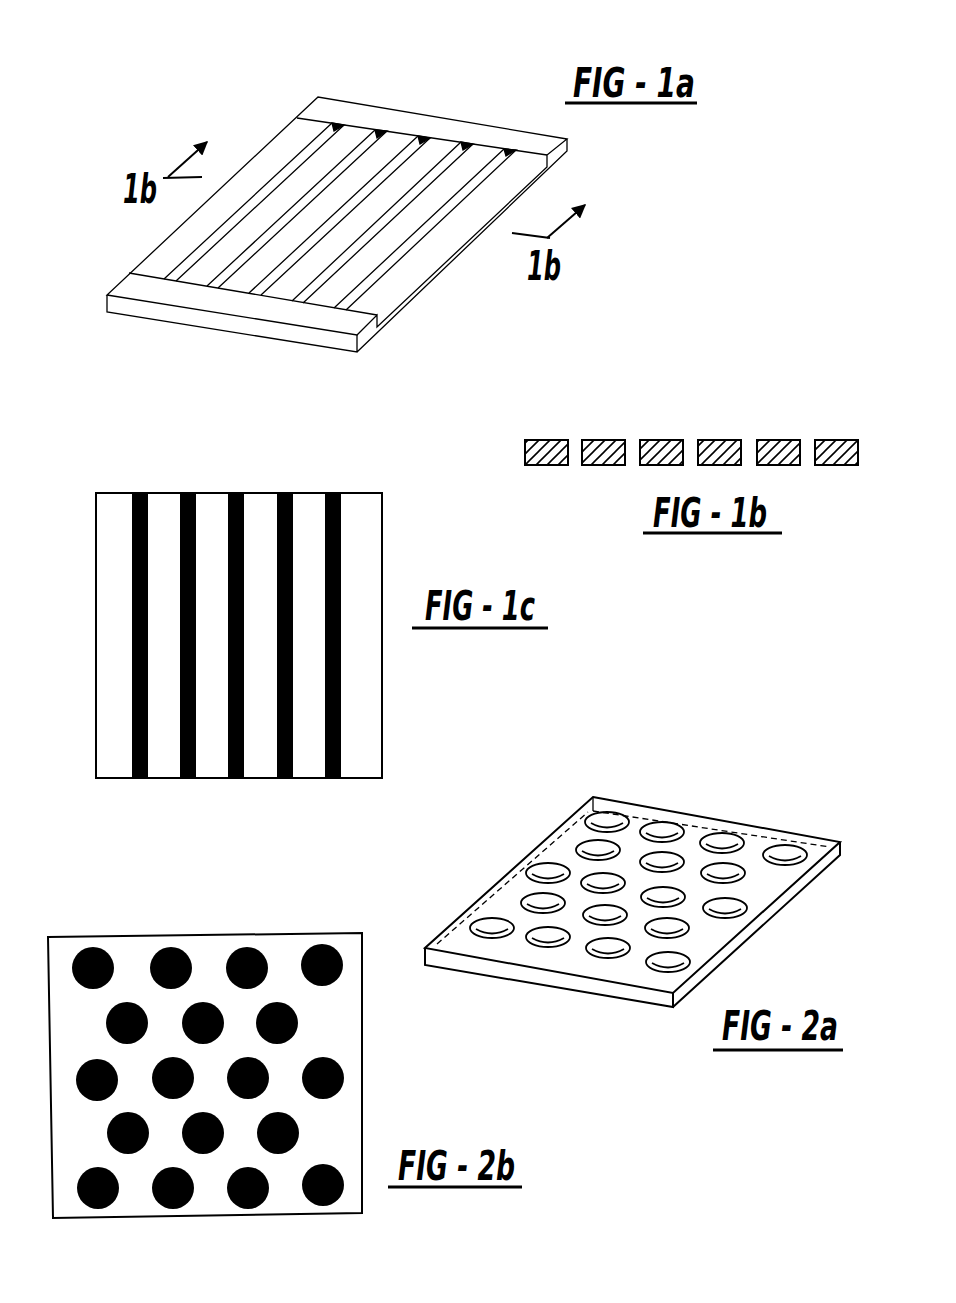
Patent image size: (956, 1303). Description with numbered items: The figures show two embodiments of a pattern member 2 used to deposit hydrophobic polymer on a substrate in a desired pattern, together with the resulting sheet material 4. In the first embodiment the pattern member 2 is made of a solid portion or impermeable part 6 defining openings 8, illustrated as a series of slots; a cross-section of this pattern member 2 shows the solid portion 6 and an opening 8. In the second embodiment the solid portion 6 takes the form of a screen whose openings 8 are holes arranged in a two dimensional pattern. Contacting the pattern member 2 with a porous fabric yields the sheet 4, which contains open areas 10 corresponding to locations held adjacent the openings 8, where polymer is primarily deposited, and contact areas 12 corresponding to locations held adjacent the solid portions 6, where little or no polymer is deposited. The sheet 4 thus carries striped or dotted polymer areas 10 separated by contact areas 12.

In FIG. 1A, the pattern member 2 is at (265, 112).
In FIG. 1B, the pattern member 2 is at (633, 425).
In FIG. 2A, the pattern member 2 is at (562, 790).
In FIG. 1C, the sheet material 4 is at (122, 462).
In FIG. 2B, the sheet material 4 is at (92, 915).
In FIG. 1A, the solid portion 6 is at (512, 135).
In FIG. 1B, the solid portion 6 is at (795, 443).
In FIG. 2A, the solid portion 6 is at (800, 837).
In FIG. 1A, the openings 8 is at (410, 135).
In FIG. 1B, the openings 8 is at (748, 447).
In FIG. 2A, the openings 8 is at (720, 843).
In FIG. 1C, the open areas 10 is at (240, 492).
In FIG. 2B, the open areas 10 is at (320, 953).
In FIG. 1C, the contact areas 12 is at (310, 508).
In FIG. 2B, the contact areas 12 is at (215, 955).